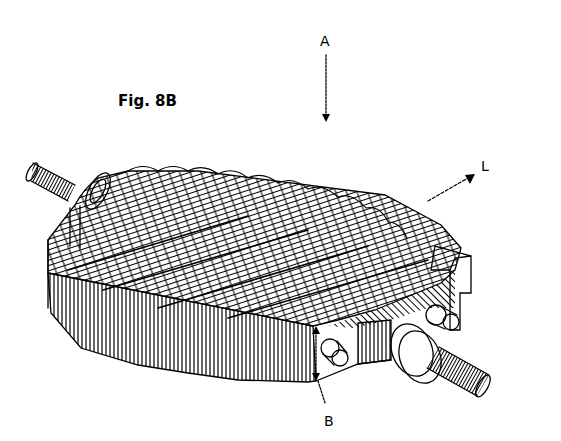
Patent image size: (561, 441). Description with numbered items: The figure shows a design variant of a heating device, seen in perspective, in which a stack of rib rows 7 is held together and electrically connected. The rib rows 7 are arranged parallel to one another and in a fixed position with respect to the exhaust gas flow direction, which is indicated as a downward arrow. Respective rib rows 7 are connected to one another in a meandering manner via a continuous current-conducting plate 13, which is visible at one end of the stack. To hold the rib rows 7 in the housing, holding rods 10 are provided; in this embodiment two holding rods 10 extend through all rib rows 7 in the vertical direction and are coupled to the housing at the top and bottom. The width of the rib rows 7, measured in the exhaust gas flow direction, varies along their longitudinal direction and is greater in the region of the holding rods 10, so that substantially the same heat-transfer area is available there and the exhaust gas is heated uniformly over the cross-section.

The rib rows 7 is at (130, 347).
The holding rod 10 is at (452, 317).
The current-conducting plate 13 is at (467, 270).